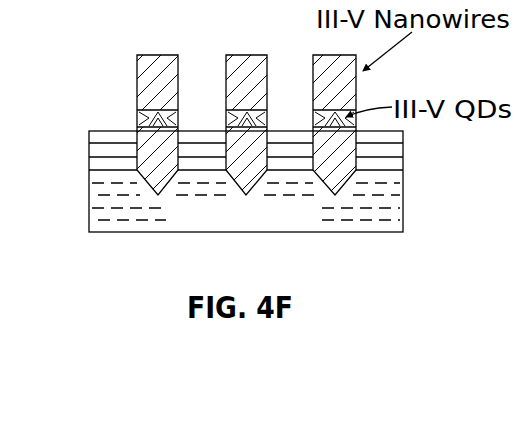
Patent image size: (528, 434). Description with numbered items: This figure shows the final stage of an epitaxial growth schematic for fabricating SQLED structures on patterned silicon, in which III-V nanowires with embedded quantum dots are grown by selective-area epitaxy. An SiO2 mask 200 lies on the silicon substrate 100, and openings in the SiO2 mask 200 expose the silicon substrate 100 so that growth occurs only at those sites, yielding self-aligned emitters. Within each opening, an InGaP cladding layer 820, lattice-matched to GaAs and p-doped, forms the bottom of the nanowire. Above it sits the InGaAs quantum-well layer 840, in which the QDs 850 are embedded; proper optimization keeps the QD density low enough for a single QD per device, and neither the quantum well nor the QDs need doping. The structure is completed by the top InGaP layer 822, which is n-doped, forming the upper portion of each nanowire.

The silicon substrate 100 is at (358, 226).
The SiO2 mask 200 is at (103, 137).
The InGaP cladding layer 820 is at (343, 140).
The top InGaP layer 822 is at (157, 58).
The InGaAs quantum-well layer 840 is at (136, 118).
The quantum dots 850 is at (346, 106).